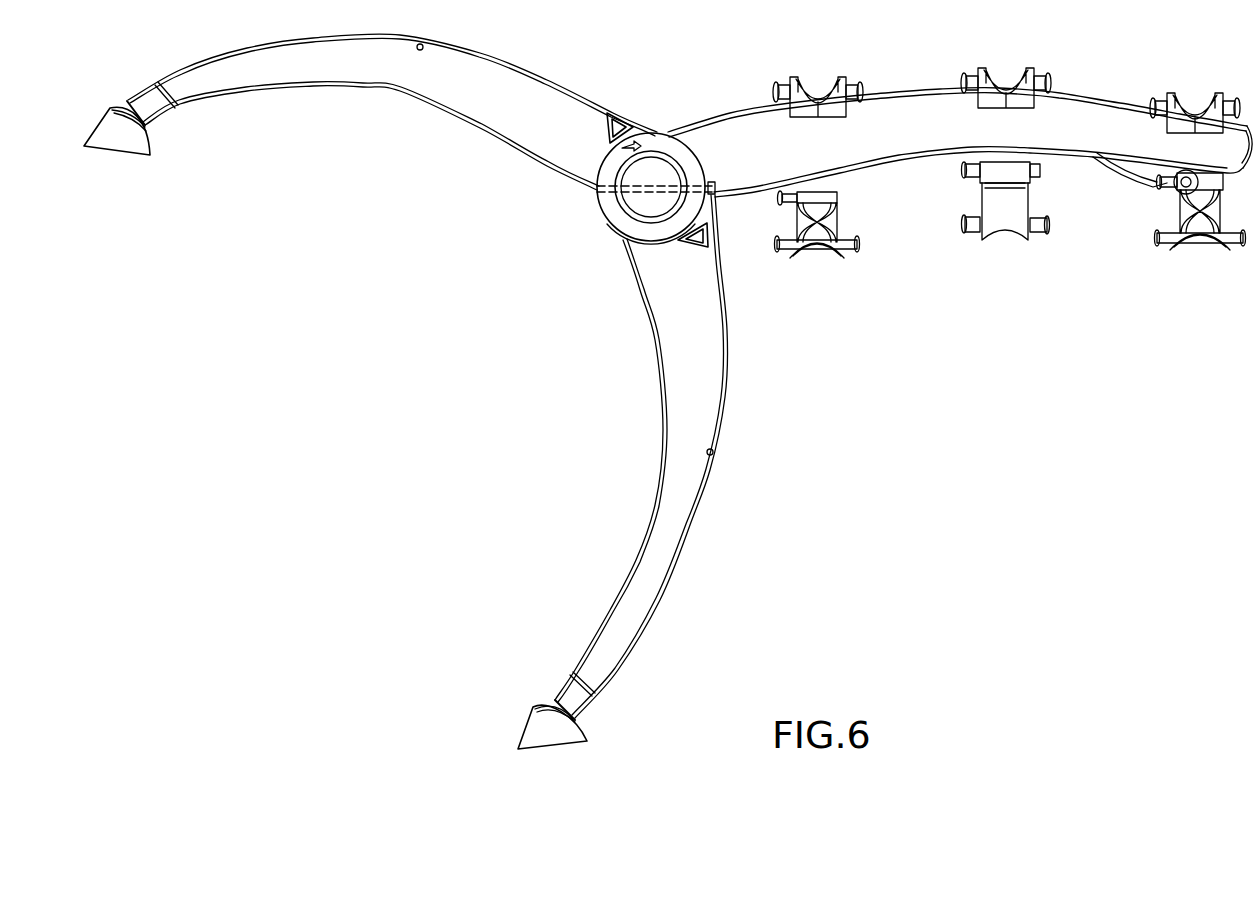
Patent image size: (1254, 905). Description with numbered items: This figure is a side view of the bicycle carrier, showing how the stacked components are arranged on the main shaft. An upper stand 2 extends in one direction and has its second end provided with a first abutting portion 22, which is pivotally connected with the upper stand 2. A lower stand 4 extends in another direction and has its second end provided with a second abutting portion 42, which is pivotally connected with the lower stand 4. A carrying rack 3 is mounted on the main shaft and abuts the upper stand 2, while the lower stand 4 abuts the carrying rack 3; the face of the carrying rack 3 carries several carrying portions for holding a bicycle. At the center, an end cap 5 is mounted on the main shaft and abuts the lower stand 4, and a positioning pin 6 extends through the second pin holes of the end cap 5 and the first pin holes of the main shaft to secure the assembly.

The upper stand 2 is at (363, 88).
The first abutting portion 22 is at (150, 153).
The lower stand 4 is at (725, 353).
The second abutting portion 42 is at (578, 730).
The end cap 5 is at (653, 135).
The positioning pin 6 is at (712, 182).
The carrying rack 3 is at (1093, 98).